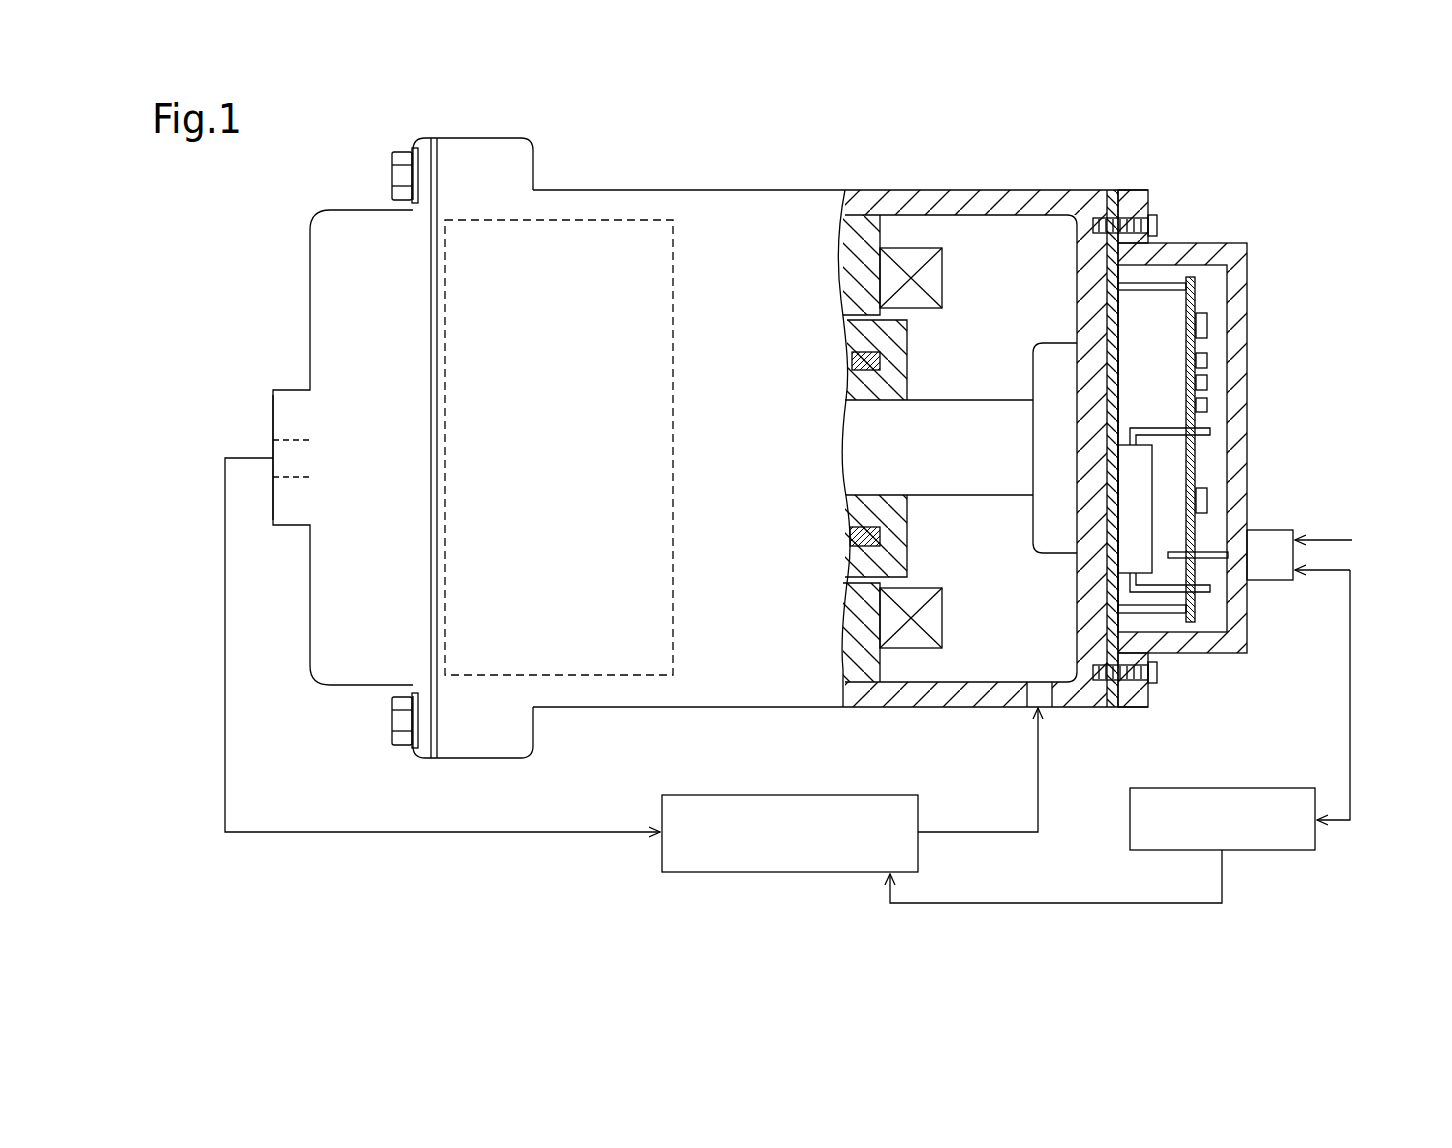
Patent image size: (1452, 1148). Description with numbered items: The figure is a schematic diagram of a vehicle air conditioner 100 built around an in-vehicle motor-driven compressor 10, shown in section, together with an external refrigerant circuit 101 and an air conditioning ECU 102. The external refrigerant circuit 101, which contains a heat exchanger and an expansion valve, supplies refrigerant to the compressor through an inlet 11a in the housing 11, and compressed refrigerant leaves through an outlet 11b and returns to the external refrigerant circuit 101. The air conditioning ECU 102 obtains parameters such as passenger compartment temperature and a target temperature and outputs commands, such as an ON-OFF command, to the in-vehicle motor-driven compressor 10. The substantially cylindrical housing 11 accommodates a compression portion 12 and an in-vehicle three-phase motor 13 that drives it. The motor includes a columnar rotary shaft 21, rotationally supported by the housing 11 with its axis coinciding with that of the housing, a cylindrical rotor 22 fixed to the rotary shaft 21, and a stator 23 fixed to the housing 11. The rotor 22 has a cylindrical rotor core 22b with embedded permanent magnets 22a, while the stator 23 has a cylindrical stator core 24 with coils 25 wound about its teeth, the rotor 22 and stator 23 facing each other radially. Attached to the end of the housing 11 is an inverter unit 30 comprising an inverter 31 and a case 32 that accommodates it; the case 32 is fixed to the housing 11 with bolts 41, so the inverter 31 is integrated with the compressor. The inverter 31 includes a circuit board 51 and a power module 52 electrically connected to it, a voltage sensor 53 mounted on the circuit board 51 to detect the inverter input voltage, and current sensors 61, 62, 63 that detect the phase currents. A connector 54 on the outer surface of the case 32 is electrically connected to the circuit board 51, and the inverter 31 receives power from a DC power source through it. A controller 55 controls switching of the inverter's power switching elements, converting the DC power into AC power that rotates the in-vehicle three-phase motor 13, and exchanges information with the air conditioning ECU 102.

The vehicle air conditioner 100 is at (1296, 175).
The in-vehicle motor-driven compressor 10 is at (716, 190).
The housing 11 is at (656, 190).
The inlet 11a is at (1040, 695).
The outlet 11b is at (270, 452).
The compression portion 12 is at (593, 220).
The in-vehicle three-phase motor 13 is at (877, 212).
The rotary shaft 21 is at (968, 483).
The rotor 22 is at (905, 362).
The magnets 22a is at (853, 361).
The rotor core 22b is at (862, 385).
The stator 23 is at (996, 250).
The stator core 24 is at (883, 257).
The coils 25 is at (930, 287).
The inverter unit 30 is at (1296, 250).
The inverter 31 is at (1204, 295).
The case 32 is at (1247, 289).
The bolts 41 is at (1160, 226).
The circuit board 51 is at (1196, 452).
The power module 52 is at (1153, 535).
The voltage sensor 53 is at (1208, 500).
The connector 54 is at (1275, 581).
The controller 55 is at (1208, 326).
The current sensor 61 is at (1208, 361).
The current sensor 62 is at (1208, 383).
The current sensor 63 is at (1208, 405).
The external refrigerant circuit 101 is at (878, 795).
The air conditioning ECU 102 is at (1245, 788).